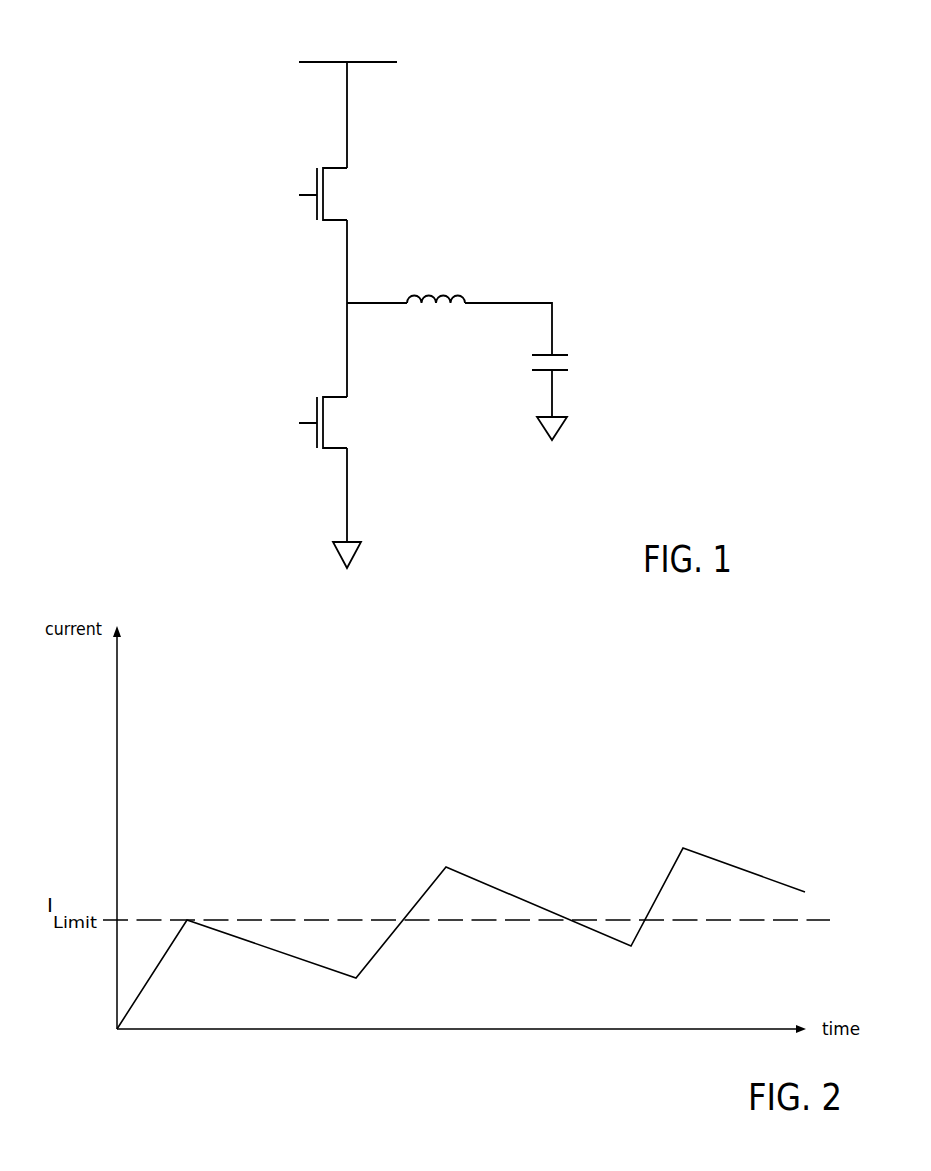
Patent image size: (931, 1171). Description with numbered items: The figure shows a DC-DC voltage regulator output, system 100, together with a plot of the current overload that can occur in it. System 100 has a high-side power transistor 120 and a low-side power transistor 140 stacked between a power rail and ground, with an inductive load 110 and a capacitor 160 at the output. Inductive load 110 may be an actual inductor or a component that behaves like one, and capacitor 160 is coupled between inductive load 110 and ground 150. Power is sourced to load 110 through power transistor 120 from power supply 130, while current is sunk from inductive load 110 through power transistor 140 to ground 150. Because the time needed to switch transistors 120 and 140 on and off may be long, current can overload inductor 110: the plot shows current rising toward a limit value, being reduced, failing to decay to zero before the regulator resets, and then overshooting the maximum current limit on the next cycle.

The system 100 is at (457, 293).
The inductive load 110 is at (443, 285).
The power transistor 120 is at (342, 200).
The power supply 130 is at (358, 60).
The power transistor 140 is at (342, 433).
The ground 150 is at (568, 410).
The capacitor 160 is at (563, 342).